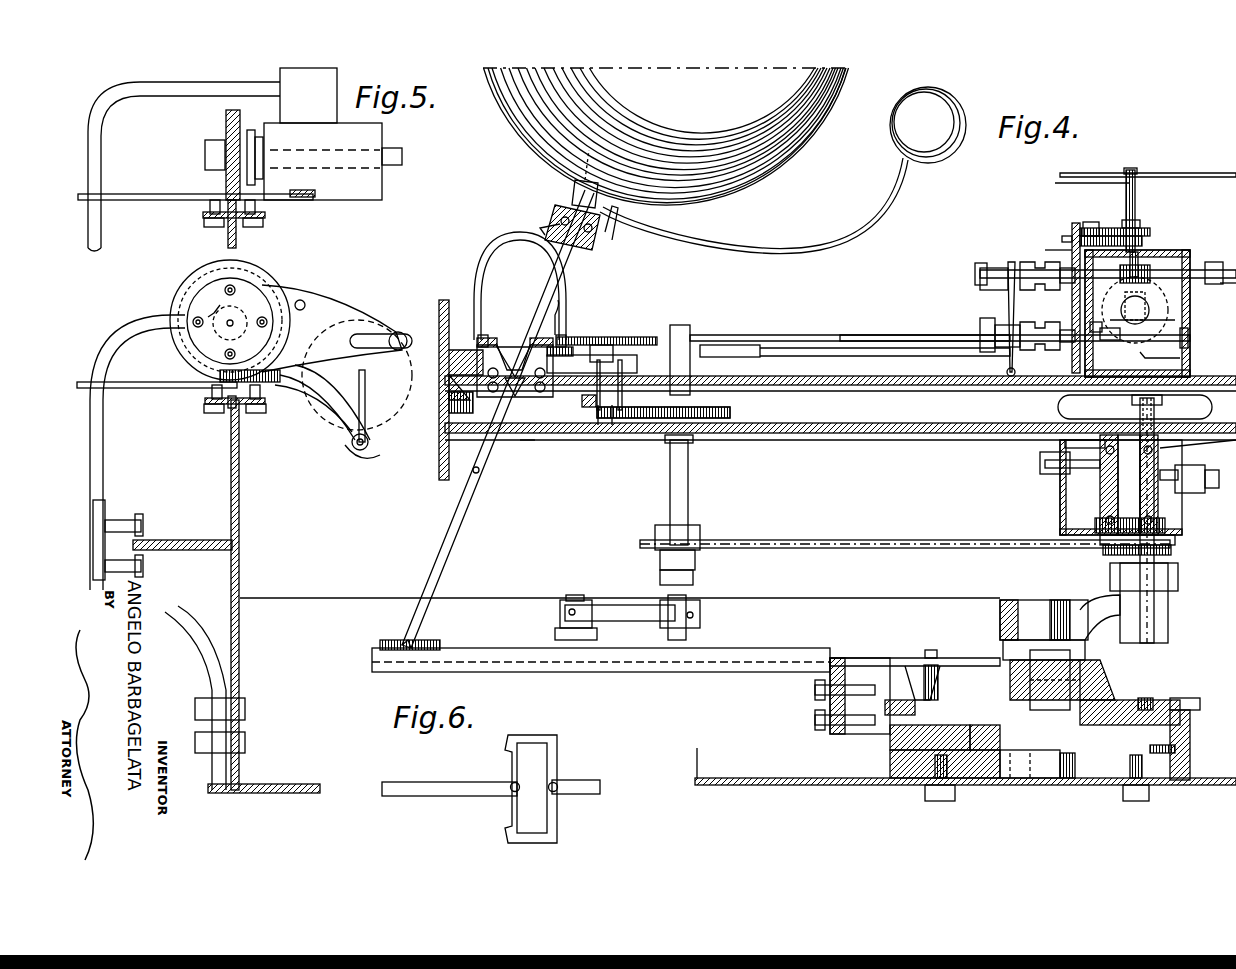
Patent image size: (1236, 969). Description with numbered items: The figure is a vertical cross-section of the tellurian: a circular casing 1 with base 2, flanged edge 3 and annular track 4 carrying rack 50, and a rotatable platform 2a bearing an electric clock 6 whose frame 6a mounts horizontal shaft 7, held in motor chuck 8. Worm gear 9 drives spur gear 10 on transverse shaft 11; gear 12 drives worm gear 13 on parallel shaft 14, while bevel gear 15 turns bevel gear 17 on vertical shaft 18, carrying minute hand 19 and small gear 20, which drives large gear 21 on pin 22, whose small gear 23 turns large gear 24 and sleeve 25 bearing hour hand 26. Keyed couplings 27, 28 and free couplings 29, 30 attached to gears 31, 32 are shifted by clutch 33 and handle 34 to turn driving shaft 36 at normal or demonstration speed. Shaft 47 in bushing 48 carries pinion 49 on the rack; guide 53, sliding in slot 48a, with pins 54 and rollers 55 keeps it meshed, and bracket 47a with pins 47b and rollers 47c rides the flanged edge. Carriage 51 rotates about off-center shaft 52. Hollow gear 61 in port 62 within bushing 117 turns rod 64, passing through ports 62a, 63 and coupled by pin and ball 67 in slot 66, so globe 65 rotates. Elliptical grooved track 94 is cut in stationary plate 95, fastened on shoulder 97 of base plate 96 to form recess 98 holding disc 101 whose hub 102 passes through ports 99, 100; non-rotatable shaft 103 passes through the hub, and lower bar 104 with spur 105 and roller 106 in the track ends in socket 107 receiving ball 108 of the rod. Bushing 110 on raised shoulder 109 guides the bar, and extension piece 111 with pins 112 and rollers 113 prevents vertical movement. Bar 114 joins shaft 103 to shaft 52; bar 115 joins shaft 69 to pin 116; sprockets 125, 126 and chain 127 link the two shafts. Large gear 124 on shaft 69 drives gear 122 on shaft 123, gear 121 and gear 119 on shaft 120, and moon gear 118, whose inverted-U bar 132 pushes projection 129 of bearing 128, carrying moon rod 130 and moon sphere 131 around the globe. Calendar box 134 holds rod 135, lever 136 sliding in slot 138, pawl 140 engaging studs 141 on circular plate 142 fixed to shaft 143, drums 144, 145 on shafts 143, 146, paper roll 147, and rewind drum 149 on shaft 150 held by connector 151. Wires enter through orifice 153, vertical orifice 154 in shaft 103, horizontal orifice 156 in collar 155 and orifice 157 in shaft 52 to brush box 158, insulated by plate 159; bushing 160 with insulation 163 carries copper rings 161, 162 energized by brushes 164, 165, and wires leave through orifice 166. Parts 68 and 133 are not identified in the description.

In FIG. 4, the casing 1 is at (240, 660).
In FIG. 4, the base 2 is at (310, 790).
In FIG. 4, the rotatable platform 2a is at (1147, 335).
In FIG. 4, the flanged edge 3 is at (190, 540).
In FIG. 5, the annular track 4 is at (238, 246).
In FIG. 4, the annular track 4 is at (240, 505).
In FIG. 4, the electric clock 6 is at (1132, 170).
In FIG. 4, the frame 6a is at (1190, 286).
In FIG. 4, the horizontal shaft 7 is at (972, 270).
In FIG. 4, the chuck 8 is at (1220, 266).
In FIG. 4, the worm gear 9 is at (1152, 272).
In FIG. 4, the spur gear 10 is at (1170, 322).
In FIG. 4, the horizontal shaft 11 is at (1129, 308).
In FIG. 4, the gear 12 is at (1107, 345).
In FIG. 4, the worm gear 13 is at (1180, 358).
In FIG. 4, the shaft 14 is at (985, 338).
In FIG. 4, the bevel gear 15 is at (1135, 340).
In FIG. 4, the bevel gear 17 is at (1170, 305).
In FIG. 4, the vertical shaft 18 is at (1150, 252).
In FIG. 4, the minute hand 19 is at (1190, 173).
In FIG. 4, the small gear 20 is at (1150, 240).
In FIG. 4, the large gear 21 is at (1062, 238).
In FIG. 4, the rotatable pin 22 is at (1044, 244).
In FIG. 4, the small gear 23 is at (1095, 212).
In FIG. 4, the large gear 24 is at (1150, 228).
In FIG. 4, the sleeve 25 is at (1122, 222).
In FIG. 4, the hour hand 26 is at (1075, 182).
In FIG. 4, the coupling 27 is at (985, 290).
In FIG. 4, the coupling 28 is at (985, 345).
In FIG. 4, the coupling 29 is at (1048, 292).
In FIG. 4, the coupling 30 is at (1055, 350).
In FIG. 4, the gear 31 is at (1072, 225).
In FIG. 4, the gear 32 is at (1070, 388).
In FIG. 4, the clutch 33 is at (1010, 305).
In FIG. 4, the handle 34 is at (1008, 368).
In FIG. 4, the driving shaft 36 is at (900, 338).
In FIG. 5, the shaft 47 is at (398, 152).
In FIG. 5, the bracket 47a is at (100, 142).
In FIG. 4, the bracket 47a is at (100, 440).
In FIG. 4, the horizontal pins 47b is at (143, 478).
In FIG. 4, the roller 47c is at (148, 570).
In FIG. 5, the bushing 48 is at (360, 177).
In FIG. 5, the slot 48a is at (312, 197).
In FIG. 5, the pinion 49 is at (226, 128).
In FIG. 5, the rack 50 is at (232, 195).
In FIG. 4, the rack 50 is at (240, 420).
In FIG. 4, the carriage 51 is at (935, 433).
In FIG. 4, the vertical shaft 52 is at (1155, 430).
In FIG. 5, the guide 53 is at (150, 185).
In FIG. 6, the guide 53 is at (557, 737).
In FIG. 4, the guide 53 is at (157, 385).
In FIG. 5, the pin 54 is at (210, 207).
In FIG. 6, the pin 54 is at (512, 784).
In FIG. 4, the pin 54 is at (212, 397).
In FIG. 5, the rollers 55 is at (205, 226).
In FIG. 4, the rollers 55 is at (210, 412).
In FIG. 4, the hollow gear 61 is at (508, 350).
In FIG. 4, the port 62 is at (535, 395).
In FIG. 4, the port 62a is at (496, 336).
In FIG. 4, the port 63 is at (530, 442).
In FIG. 4, the rod 64 is at (478, 472).
In FIG. 4, the earth-simulating globe 65 is at (666, 136).
In FIG. 4, the slot 66 is at (560, 325).
In FIG. 4, the pin and ball 67 is at (520, 392).
In FIG. 4, the shaft 68 is at (688, 342).
In FIG. 4, the shaft 69 is at (700, 340).
In FIG. 4, the grooved track 94 is at (1168, 698).
In FIG. 4, the stationary plate 95 is at (1135, 700).
In FIG. 4, the base plate 96 is at (1148, 800).
In FIG. 4, the annular shoulder 97 is at (1175, 750).
In FIG. 4, the recess 98 is at (1170, 780).
In FIG. 4, the port 99 is at (1072, 778).
In FIG. 4, the port 100 is at (1088, 700).
In FIG. 4, the disc 101 is at (938, 785).
In FIG. 4, the hollow hub 102 is at (1040, 780).
In FIG. 4, the shaft 103 is at (980, 778).
In FIG. 4, the lower bar 104 is at (635, 672).
In FIG. 4, the spur 105 is at (900, 658).
In FIG. 4, the roller 106 is at (890, 718).
In FIG. 4, the socket 107 is at (430, 642).
In FIG. 4, the ball 108 is at (398, 640).
In FIG. 4, the raised shoulder 109 is at (1085, 660).
In FIG. 4, the bushing 110 is at (990, 660).
In FIG. 4, the extension piece 111 is at (835, 658).
In FIG. 4, the horizontal pins 112 is at (845, 725).
In FIG. 4, the roller 113 is at (870, 660).
In FIG. 4, the bar 114 is at (1090, 600).
In FIG. 4, the bar 115 is at (612, 605).
In FIG. 4, the pin 116 is at (570, 600).
In FIG. 4, the bushing 117 is at (570, 338).
In FIG. 4, the moon gear 118 is at (484, 333).
In FIG. 4, the gear 119 is at (655, 340).
In FIG. 4, the shaft 120 is at (590, 395).
In FIG. 4, the gear 121 is at (590, 440).
In FIG. 4, the gear 122 is at (625, 440).
In FIG. 4, the shaft 123 is at (663, 403).
In FIG. 4, the large gear 124 is at (740, 414).
In FIG. 4, the sprocket 125 is at (1172, 550).
In FIG. 4, the sprocket 126 is at (705, 535).
In FIG. 4, the chain 127 is at (955, 540).
In FIG. 4, the bearing 128 is at (572, 200).
In FIG. 4, the projection 129 is at (590, 250).
In FIG. 4, the moon rod 130 is at (820, 245).
In FIG. 4, the moon-simulating sphere 131 is at (940, 105).
In FIG. 4, the bar 132 is at (490, 237).
In FIG. 4, the tilting rod 133 is at (462, 500).
In FIG. 4, the calendar box 134 is at (438, 310).
In FIG. 4, the rod 135 is at (472, 378).
In FIG. 4, the lever 136 is at (310, 370).
In FIG. 4, the slot 138 is at (362, 335).
In FIG. 4, the pawl 140 is at (255, 368).
In FIG. 4, the studs 141 is at (225, 292).
In FIG. 4, the circular plate 142 is at (262, 300).
In FIG. 4, the shaft 143 is at (226, 327).
In FIG. 4, the drum 144 is at (180, 305).
In FIG. 4, the drum 145 is at (385, 445).
In FIG. 4, the shaft 146 is at (346, 404).
In FIG. 4, the roll of paper 147 is at (335, 325).
In FIG. 4, the drum 149 is at (360, 450).
In FIG. 4, the shaft 150 is at (378, 455).
In FIG. 4, the connector 151 is at (345, 430).
In FIG. 4, the orifice 153 is at (1030, 780).
In FIG. 4, the vertical orifice 154 is at (1013, 686).
In FIG. 4, the collar 155 is at (1010, 635).
In FIG. 4, the horizontal orifice 156 is at (1044, 600).
In FIG. 4, the orifice 157 is at (1168, 603).
In FIG. 4, the brush box 158 is at (1178, 542).
In FIG. 4, the plate 159 is at (1095, 525).
In FIG. 4, the bushing 160 is at (1198, 442).
In FIG. 4, the copper ring 161 is at (1205, 474).
In FIG. 4, the copper ring 162 is at (1095, 490).
In FIG. 4, the insulation 163 is at (1065, 443).
In FIG. 4, the brush 164 is at (1045, 462).
In FIG. 4, the brush 165 is at (1180, 470).
In FIG. 4, the orifice 166 is at (1135, 420).